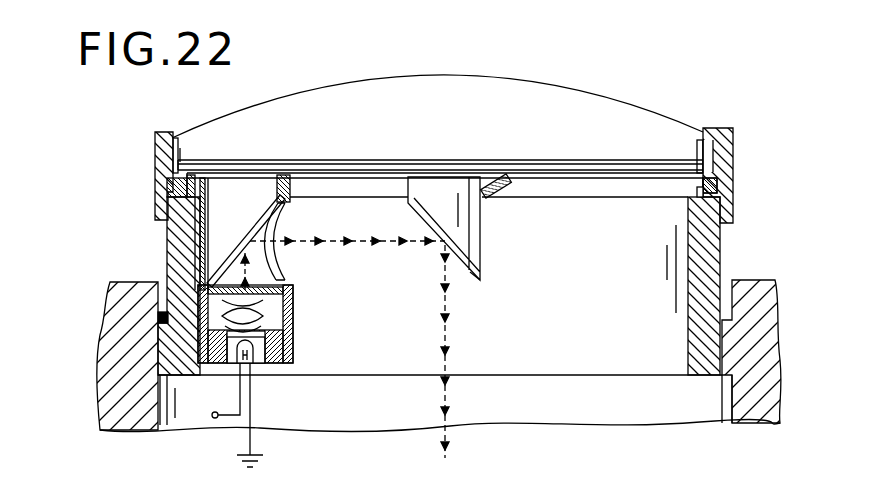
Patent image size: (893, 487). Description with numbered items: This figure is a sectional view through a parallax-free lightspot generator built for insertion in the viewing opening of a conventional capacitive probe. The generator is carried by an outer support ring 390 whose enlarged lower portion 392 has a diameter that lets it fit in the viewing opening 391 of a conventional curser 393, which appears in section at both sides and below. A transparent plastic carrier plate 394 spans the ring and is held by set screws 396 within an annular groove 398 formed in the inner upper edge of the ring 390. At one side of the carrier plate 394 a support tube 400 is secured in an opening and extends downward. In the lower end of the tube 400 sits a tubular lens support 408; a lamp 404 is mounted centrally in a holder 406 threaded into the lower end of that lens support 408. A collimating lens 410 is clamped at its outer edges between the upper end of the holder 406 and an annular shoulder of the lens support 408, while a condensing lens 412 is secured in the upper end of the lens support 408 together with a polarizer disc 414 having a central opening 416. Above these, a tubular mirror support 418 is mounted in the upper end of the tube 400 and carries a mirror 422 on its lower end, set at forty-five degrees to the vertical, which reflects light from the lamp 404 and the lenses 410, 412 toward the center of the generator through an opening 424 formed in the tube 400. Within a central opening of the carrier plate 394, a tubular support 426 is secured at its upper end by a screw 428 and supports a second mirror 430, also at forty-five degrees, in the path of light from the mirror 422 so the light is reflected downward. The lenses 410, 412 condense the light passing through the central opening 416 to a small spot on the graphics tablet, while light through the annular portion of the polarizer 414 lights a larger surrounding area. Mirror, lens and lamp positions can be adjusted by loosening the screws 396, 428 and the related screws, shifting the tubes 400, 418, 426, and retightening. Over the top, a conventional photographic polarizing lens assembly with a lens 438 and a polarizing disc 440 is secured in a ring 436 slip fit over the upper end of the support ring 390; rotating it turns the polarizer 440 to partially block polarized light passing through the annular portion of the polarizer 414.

The outer support ring 390 is at (183, 258).
The viewing opening 391 is at (168, 425).
The enlarged lower portion 392 is at (717, 357).
The curser 393 is at (130, 397).
The transparent plastic carrier plate 394 is at (573, 187).
The set screws 396 is at (172, 185).
The annular groove 398 is at (692, 190).
The support tube 400 is at (293, 345).
The lamp 404 is at (252, 363).
The holder 406 is at (233, 352).
The tubular lens support 408 is at (290, 315).
The collimating lens 410 is at (240, 323).
The condensing lens 412 is at (243, 310).
The polarizer disc 414 is at (287, 290).
The central opening 416 is at (287, 268).
The tubular mirror support 418 is at (223, 200).
The mirror 422 is at (240, 233).
The opening 424 is at (288, 205).
The tubular support 426 is at (465, 230).
The screw 428 is at (487, 190).
The mirror 430 is at (466, 273).
The ring 436 is at (162, 148).
The lens 438 is at (380, 79).
The polarizing disc 440 is at (385, 163).